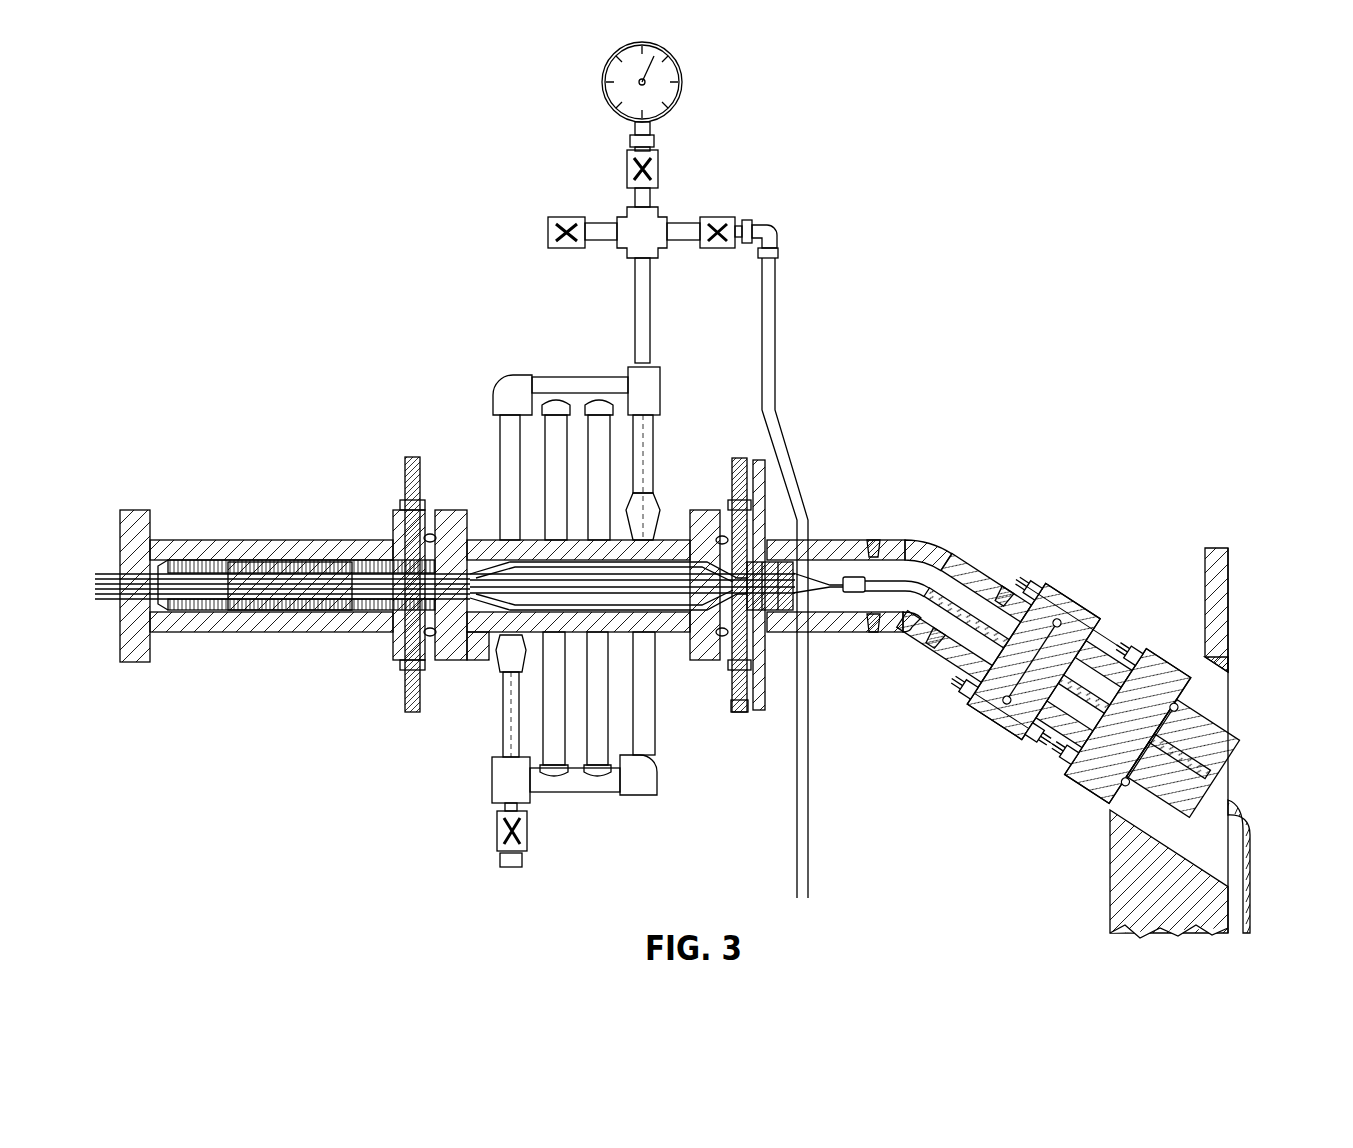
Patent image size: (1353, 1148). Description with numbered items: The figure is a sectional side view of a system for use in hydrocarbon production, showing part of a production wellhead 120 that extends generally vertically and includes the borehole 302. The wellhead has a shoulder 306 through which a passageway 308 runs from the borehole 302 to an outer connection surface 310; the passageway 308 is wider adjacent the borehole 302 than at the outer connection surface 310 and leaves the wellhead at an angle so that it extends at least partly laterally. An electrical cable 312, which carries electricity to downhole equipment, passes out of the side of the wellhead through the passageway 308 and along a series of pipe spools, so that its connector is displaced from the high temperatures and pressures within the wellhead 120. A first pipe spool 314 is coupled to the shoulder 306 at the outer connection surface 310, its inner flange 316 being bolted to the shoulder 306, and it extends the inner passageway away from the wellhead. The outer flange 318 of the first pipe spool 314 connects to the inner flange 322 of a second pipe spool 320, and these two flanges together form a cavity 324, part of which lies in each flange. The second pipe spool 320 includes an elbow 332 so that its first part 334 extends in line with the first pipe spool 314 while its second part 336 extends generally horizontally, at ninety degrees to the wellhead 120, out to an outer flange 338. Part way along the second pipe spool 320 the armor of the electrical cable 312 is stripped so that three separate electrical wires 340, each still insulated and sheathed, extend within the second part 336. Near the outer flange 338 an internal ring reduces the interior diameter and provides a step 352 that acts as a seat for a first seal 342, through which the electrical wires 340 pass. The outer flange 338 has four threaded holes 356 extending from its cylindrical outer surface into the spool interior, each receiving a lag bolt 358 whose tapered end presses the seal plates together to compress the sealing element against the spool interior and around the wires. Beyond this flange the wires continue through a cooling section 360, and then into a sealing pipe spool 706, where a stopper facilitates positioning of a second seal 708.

The production wellhead 120 is at (1204, 570).
The borehole 302 is at (1252, 597).
The shoulder 306 is at (1215, 697).
The passageway 308 is at (1185, 733).
The outer connection surface 310 is at (1173, 683).
The electrical cable 312 is at (1127, 793).
The first pipe spool 314 is at (1040, 757).
The inner flange 316 is at (1086, 802).
The outer flange 318 is at (988, 726).
The second pipe spool 320 is at (890, 541).
The inner flange 322 is at (1052, 580).
The cavity 324 is at (1077, 620).
The elbow 332 is at (946, 546).
The first part 334 is at (1005, 580).
The second part 336 is at (822, 556).
The outer flange 338 is at (717, 528).
The electrical wires 340 is at (822, 597).
The first seal 342 is at (772, 614).
The step 352 is at (790, 540).
The threaded holes 356 is at (743, 662).
The lag bolt 358 is at (740, 713).
The cooling section 360 is at (485, 633).
The sealing pipe spool 706 is at (275, 627).
The second seal 708 is at (345, 613).